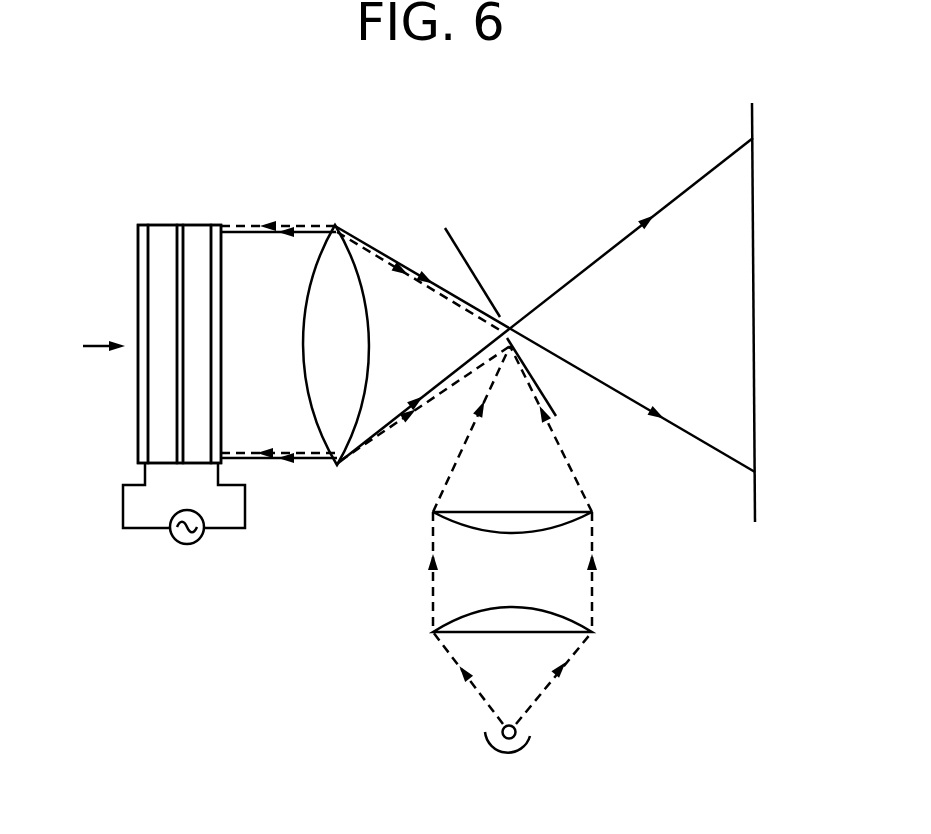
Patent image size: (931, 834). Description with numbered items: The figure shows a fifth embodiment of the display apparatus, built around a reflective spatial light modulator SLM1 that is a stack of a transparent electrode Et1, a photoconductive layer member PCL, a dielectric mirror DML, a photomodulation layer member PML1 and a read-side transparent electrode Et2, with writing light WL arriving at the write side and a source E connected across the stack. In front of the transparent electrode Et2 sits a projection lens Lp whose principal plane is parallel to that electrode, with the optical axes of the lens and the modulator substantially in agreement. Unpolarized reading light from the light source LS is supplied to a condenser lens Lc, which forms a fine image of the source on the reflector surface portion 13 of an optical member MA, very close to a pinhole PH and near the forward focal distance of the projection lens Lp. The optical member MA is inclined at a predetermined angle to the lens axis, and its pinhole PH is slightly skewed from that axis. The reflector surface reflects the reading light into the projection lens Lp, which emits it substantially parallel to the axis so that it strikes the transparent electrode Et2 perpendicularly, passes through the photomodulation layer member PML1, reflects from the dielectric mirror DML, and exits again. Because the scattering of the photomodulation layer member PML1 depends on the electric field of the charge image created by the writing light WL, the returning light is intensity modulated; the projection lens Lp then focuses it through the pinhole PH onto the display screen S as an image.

The spatial light modulator SLM1 is at (246, 472).
The transparent electrode Et1 is at (138, 245).
The photoconductive layer member PCL is at (157, 226).
The dielectric mirror DML is at (180, 224).
The photomodulation layer member PML1 is at (198, 224).
The transparent electrode Et2 is at (215, 224).
The writing light WL is at (80, 347).
The AC power source E is at (196, 541).
The projection lens Lp is at (338, 233).
The optical member MA is at (558, 405).
The pinhole PH is at (507, 318).
The reflector surface portion 13 is at (519, 374).
The display screen S is at (755, 187).
The condenser lens Lc is at (607, 500).
The light source LS is at (530, 734).